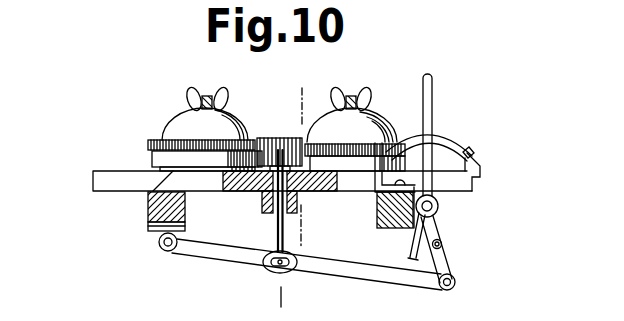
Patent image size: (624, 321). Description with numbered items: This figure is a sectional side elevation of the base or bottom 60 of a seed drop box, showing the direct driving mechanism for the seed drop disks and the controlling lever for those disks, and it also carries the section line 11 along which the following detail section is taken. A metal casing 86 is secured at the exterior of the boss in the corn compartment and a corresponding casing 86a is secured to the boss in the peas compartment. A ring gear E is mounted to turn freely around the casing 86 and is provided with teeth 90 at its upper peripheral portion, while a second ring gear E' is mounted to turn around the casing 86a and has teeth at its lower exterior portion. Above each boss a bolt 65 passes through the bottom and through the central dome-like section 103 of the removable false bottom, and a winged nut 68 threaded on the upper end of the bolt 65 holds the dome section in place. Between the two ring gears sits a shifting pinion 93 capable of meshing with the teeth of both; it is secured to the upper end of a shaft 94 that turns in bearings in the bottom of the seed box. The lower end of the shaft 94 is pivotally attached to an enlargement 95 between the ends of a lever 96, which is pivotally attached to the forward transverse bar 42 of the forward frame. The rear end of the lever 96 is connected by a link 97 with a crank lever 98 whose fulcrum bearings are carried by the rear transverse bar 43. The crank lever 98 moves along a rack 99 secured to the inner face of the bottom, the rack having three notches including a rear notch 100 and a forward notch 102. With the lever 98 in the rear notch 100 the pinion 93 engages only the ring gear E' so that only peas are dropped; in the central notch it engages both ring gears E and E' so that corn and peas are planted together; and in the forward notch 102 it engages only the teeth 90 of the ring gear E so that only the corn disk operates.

The bottom 60 is at (94, 181).
The bolt 65 is at (208, 96).
The winged nut 68 is at (226, 98).
The teeth 90 is at (150, 140).
The dome-like section 103 is at (279, 125).
The forward notch 102 is at (370, 130).
The shifting pinion 93 is at (288, 138).
The shaft 94 is at (277, 228).
The enlargement 95 is at (268, 268).
The lever 96 is at (216, 259).
The forward transverse bar 42 is at (186, 210).
The rear transverse bar 43 is at (394, 229).
The metal casing 86 is at (154, 191).
The casing 86a is at (369, 173).
The link 97 is at (455, 258).
The crank lever 98 is at (424, 132).
The rack 99 is at (447, 138).
The rear notch 100 is at (474, 152).
The line 11— 11 is at (293, 195).
The ring gear E is at (193, 160).
The second ring gear E' is at (357, 155).